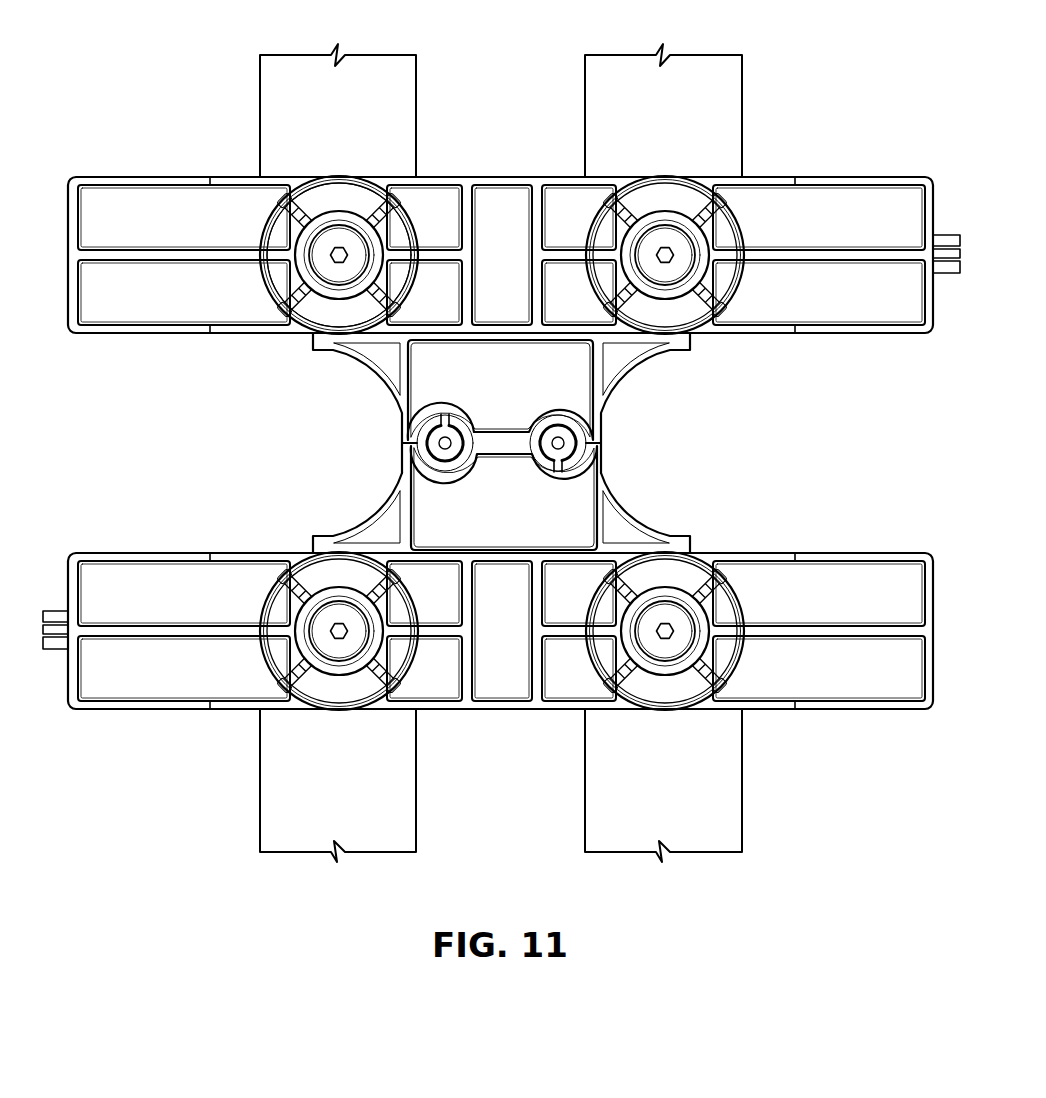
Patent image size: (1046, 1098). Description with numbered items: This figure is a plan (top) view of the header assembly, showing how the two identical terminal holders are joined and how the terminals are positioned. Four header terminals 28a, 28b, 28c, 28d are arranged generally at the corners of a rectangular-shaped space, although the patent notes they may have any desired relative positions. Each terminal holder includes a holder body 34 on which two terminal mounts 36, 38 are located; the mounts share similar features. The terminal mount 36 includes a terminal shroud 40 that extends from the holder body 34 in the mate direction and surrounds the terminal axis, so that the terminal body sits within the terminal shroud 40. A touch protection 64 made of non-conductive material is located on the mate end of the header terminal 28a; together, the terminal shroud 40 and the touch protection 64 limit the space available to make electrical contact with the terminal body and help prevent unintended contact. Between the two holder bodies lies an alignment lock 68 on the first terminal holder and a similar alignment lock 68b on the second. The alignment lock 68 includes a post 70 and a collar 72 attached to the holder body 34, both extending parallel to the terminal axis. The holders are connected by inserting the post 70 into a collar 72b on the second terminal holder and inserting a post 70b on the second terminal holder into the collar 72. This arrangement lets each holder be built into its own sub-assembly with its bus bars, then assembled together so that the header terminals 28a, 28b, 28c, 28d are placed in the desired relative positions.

The header terminal 28a is at (385, 243).
The header terminal 28b is at (712, 255).
The header terminal 28c is at (352, 665).
The header terminal 28d is at (660, 665).
The holder body 34 is at (553, 178).
The terminal mount 36 is at (330, 157).
The terminal mount 38 is at (684, 168).
The terminal shroud 40 is at (372, 188).
The touch protection 64 is at (288, 190).
The alignment lock 68 is at (368, 403).
The alignment lock 68b is at (630, 493).
The post 70 is at (453, 428).
The post 70b is at (557, 476).
The collar 72 is at (546, 428).
The collar 72b is at (449, 461).